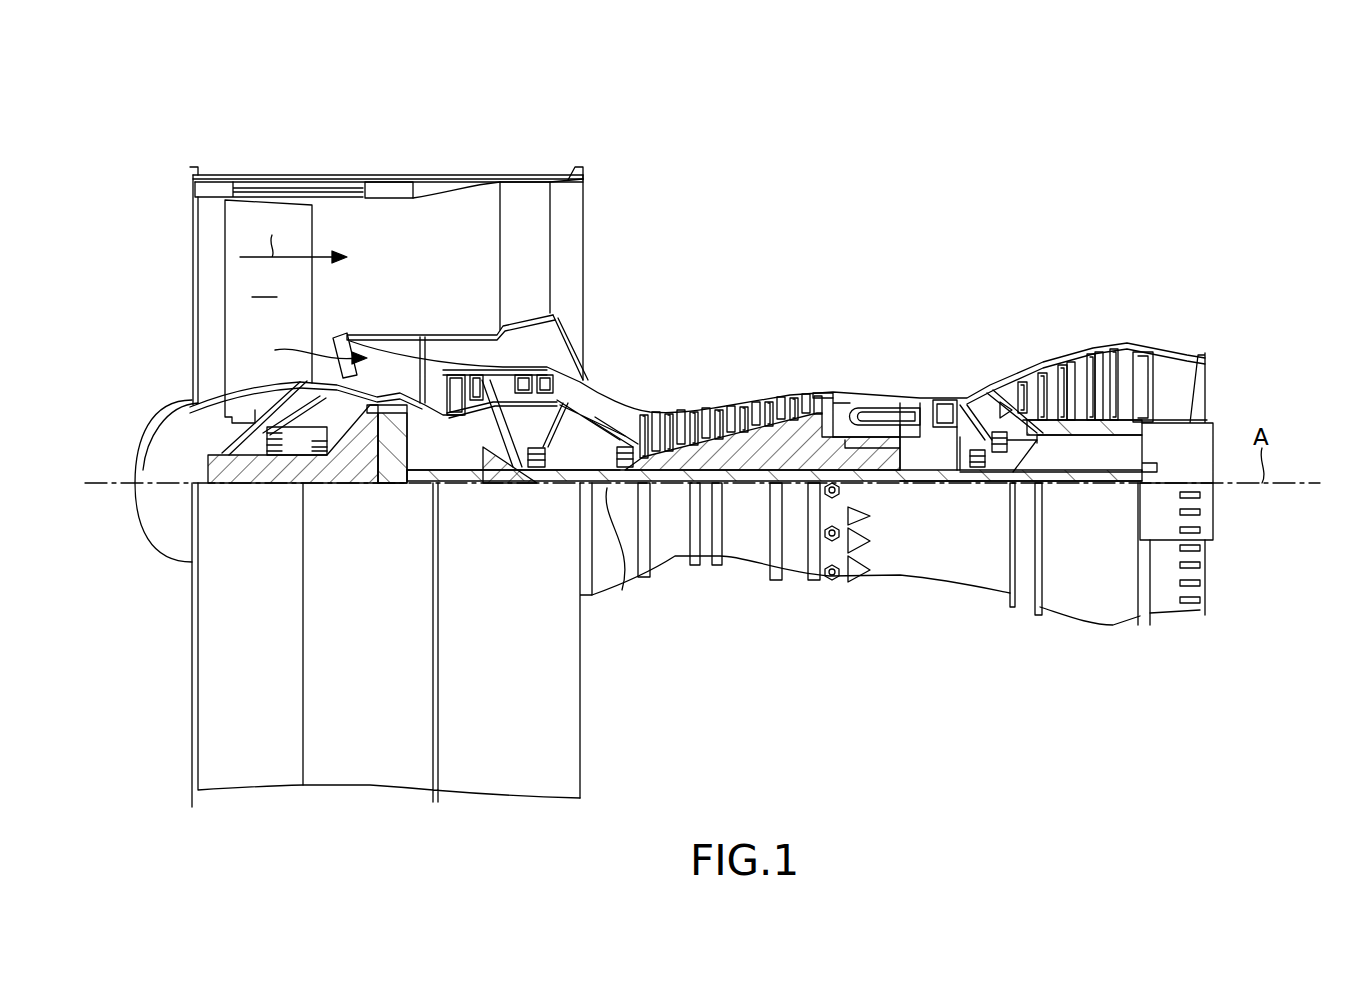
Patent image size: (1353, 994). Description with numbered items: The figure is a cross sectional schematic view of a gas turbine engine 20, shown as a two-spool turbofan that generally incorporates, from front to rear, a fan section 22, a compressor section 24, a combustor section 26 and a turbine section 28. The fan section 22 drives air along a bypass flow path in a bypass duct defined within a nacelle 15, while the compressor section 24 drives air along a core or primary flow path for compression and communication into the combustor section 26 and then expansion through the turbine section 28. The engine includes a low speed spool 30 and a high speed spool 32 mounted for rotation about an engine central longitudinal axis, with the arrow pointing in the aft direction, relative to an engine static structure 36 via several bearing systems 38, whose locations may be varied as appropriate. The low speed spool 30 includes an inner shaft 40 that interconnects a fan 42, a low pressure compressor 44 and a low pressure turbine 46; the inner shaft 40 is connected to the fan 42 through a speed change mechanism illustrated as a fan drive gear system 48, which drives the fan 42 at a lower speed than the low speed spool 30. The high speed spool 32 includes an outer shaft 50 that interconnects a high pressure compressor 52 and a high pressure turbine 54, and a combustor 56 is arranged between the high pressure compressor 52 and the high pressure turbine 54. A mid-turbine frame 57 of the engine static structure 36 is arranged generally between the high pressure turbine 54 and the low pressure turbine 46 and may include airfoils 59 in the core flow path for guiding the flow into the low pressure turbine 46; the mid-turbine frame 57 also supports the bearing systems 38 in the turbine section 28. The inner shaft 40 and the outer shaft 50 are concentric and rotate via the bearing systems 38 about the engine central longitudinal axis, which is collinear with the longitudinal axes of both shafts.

The nacelle 15 is at (387, 182).
The gas turbine engine 20 is at (900, 192).
The fan section 22 is at (305, 162).
The compressor section 24 is at (630, 371).
The combustor section 26 is at (870, 356).
The turbine section 28 is at (1030, 326).
The low speed spool 30 is at (750, 488).
The high speed spool 32 is at (808, 445).
The engine static structure 36 is at (797, 555).
The bearing systems 38 is at (536, 470).
The inner shaft 40 is at (622, 590).
The fan 42 is at (280, 492).
The low pressure compressor 44 is at (510, 378).
The low pressure turbine 46 is at (1082, 362).
The fan drive gear system 48 is at (395, 470).
The outer shaft 50 is at (870, 482).
The high pressure compressor 52 is at (756, 407).
The high pressure turbine 54 is at (946, 398).
The combustor 56 is at (893, 411).
The mid-turbine frame 57 is at (990, 393).
The airfoils 59 is at (987, 412).